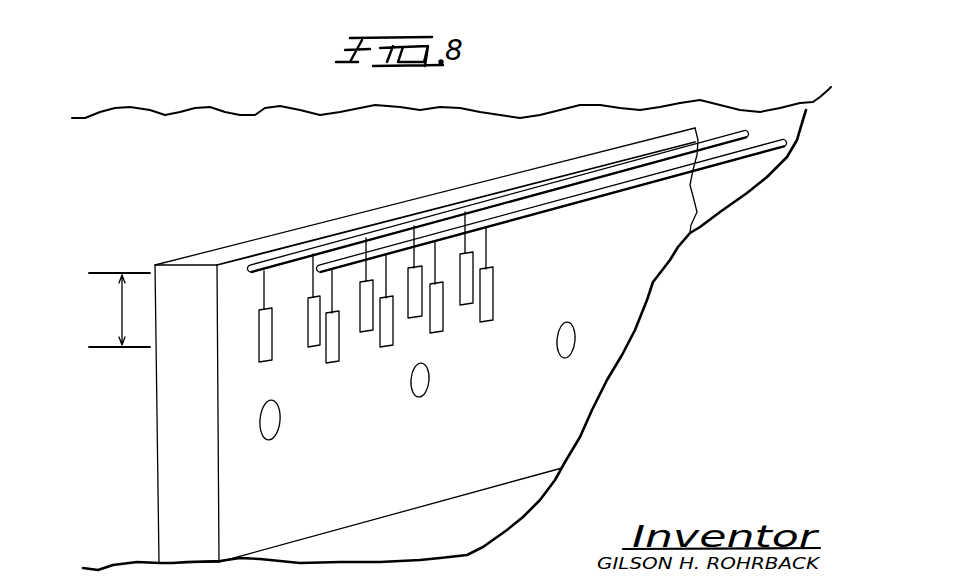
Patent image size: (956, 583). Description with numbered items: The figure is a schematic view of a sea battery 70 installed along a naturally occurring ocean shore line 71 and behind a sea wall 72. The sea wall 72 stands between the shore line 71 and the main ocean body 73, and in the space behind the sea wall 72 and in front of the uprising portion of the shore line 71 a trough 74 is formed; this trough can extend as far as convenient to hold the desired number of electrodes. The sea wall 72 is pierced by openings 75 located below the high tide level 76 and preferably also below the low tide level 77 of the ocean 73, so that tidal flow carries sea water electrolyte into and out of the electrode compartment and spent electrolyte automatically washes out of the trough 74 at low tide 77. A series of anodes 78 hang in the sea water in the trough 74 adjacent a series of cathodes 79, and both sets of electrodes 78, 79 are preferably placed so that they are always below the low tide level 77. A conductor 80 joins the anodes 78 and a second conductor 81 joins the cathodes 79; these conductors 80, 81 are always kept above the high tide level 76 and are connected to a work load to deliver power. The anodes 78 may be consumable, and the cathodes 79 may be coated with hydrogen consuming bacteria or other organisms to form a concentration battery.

The battery 70 is at (471, 344).
The ocean shore line 71 is at (652, 282).
The sea wall 72 is at (200, 259).
The main ocean body 73 is at (105, 269).
The trough 74 is at (689, 228).
The openings 75 is at (266, 424).
The high tide level 76 is at (107, 275).
The low tide level 77 is at (108, 348).
The anodes 78 is at (320, 320).
The cathodes 79 is at (437, 330).
The conductor 80 is at (550, 183).
The second conductor 81 is at (567, 203).